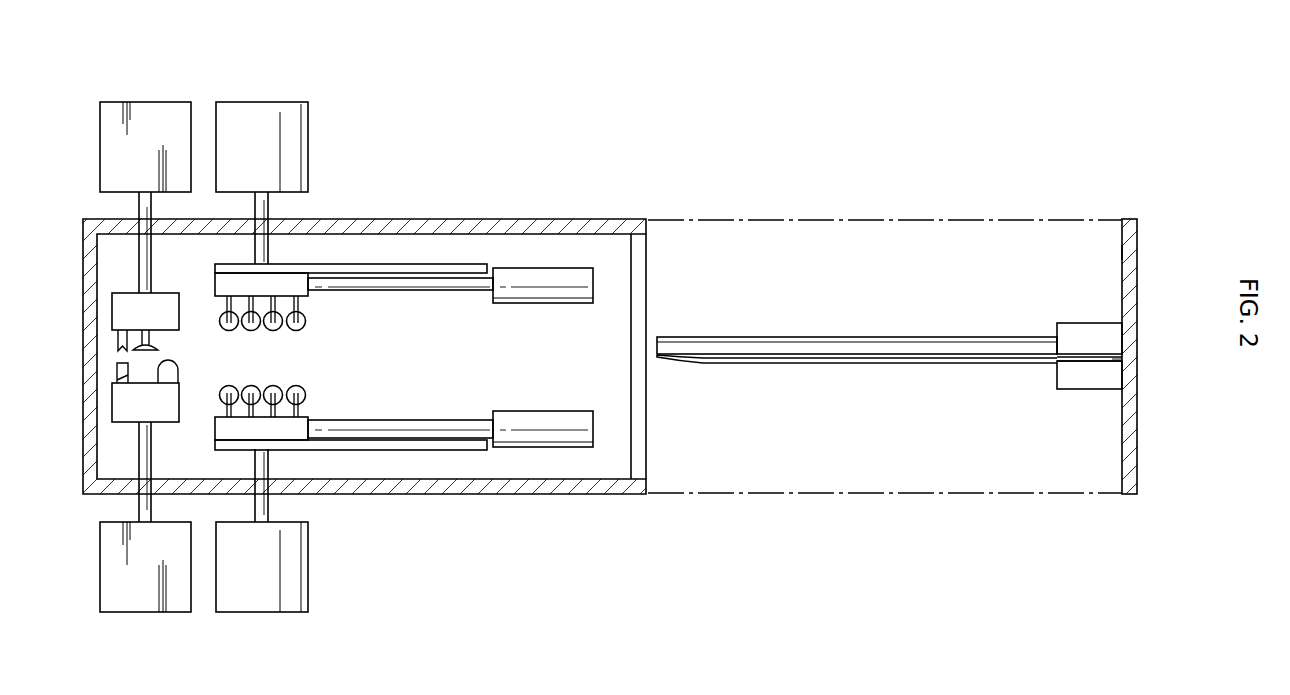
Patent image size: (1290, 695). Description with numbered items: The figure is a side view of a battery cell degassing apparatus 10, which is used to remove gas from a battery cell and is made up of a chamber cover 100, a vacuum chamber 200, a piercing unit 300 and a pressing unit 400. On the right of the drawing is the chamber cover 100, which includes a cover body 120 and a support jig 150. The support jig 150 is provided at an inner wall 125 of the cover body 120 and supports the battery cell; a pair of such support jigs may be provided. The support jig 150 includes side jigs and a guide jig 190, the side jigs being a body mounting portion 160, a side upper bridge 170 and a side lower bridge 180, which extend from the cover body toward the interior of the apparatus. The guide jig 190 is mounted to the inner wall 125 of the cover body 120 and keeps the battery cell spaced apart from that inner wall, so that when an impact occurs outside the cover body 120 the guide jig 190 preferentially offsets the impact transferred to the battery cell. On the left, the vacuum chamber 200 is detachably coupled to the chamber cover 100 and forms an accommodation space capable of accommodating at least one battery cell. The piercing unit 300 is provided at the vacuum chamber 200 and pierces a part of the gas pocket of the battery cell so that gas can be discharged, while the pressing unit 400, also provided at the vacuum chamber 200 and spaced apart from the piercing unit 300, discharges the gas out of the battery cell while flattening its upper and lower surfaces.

The battery cell degassing apparatus 10 is at (771, 71).
The chamber cover 100 is at (1144, 202).
The cover body 120 is at (1137, 263).
The inner wall 125 is at (1122, 252).
The support jig 150 is at (934, 302).
The body mounting portion 160 is at (1083, 323).
The side upper bridge 170 is at (820, 337).
The side lower bridge 180 is at (820, 365).
The guide jig 190 is at (1122, 358).
The vacuum chamber 200 is at (476, 184).
The piercing unit 300 is at (176, 92).
The pressing unit 400 is at (291, 92).